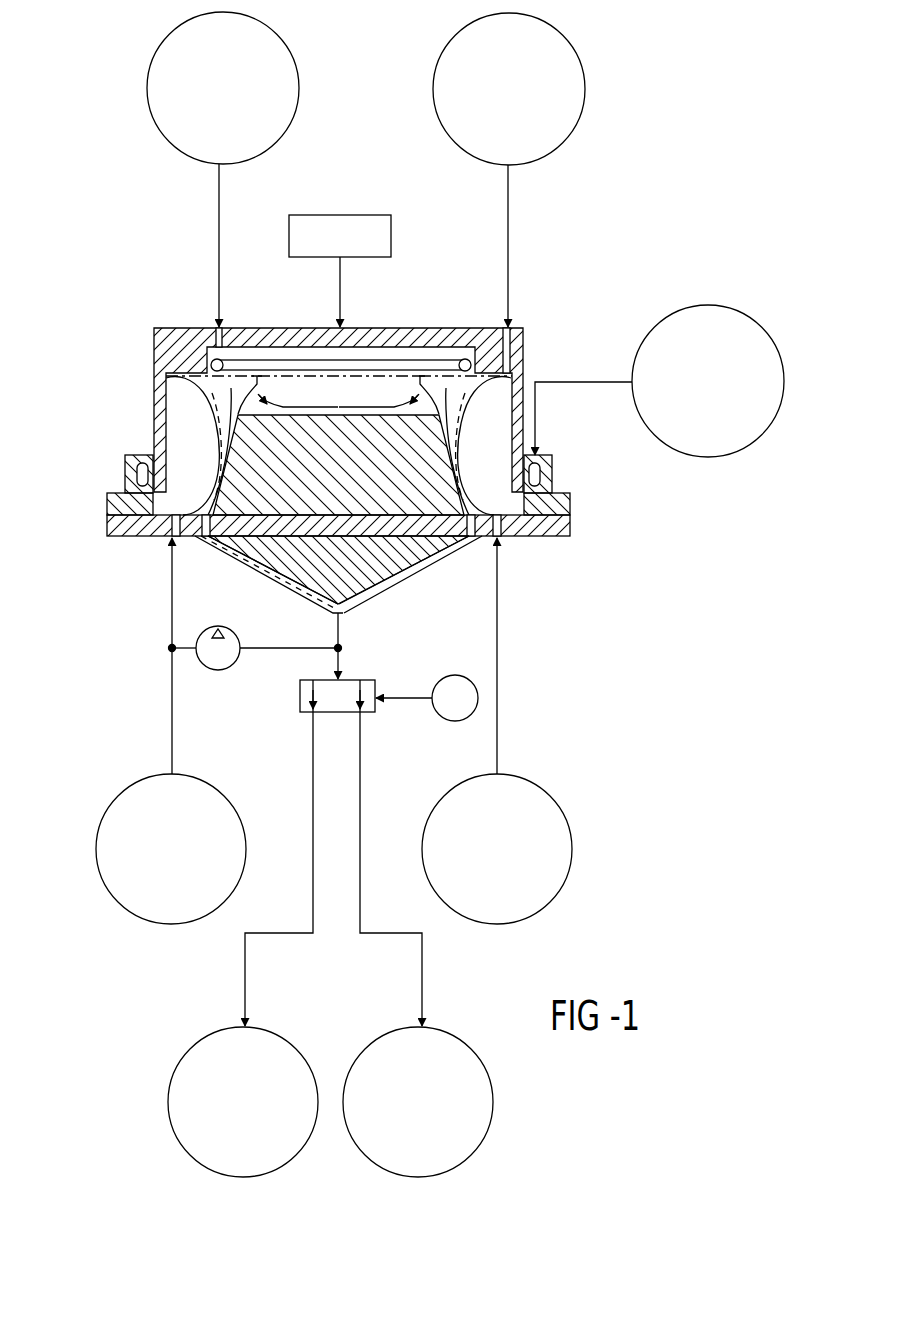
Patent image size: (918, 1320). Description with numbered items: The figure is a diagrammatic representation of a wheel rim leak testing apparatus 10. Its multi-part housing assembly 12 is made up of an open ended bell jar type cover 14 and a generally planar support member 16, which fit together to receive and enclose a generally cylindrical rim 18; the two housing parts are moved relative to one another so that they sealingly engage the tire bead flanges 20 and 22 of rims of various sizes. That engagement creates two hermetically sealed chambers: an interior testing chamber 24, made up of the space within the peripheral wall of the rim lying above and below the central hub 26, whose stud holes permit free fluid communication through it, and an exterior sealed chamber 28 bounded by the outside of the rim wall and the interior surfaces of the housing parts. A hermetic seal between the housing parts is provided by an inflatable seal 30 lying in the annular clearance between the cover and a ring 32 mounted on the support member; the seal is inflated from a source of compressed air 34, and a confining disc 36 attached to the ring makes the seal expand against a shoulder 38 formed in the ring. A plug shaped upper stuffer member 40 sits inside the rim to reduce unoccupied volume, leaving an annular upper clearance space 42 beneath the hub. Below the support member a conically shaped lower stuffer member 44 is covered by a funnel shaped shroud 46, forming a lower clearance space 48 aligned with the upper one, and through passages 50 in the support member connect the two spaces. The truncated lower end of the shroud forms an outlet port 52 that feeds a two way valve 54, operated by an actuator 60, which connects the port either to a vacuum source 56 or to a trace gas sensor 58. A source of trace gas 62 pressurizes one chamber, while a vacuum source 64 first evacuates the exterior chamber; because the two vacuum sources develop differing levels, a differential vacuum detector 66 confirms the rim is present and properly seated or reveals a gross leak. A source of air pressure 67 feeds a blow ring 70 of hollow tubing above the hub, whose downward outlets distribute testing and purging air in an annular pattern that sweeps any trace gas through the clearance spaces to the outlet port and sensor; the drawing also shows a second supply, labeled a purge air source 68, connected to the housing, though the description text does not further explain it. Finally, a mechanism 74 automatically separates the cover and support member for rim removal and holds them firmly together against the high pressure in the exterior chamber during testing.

The apparatus 10 is at (583, 290).
The housing assembly 12 is at (570, 515).
The cover 14 is at (155, 345).
The support member 16 is at (106, 516).
The rim 18 is at (208, 408).
The tire bead flange 20 is at (497, 385).
The tire bead flange 22 is at (505, 500).
The interior testing chamber 24 is at (324, 423).
The central hub 26 is at (366, 376).
The exterior sealed chamber 28 is at (204, 453).
The inflatable seal 30 is at (134, 470).
The ring 32 is at (120, 480).
The source of compressed air 34 is at (668, 318).
The confining disc 36 is at (136, 450).
The shoulder 38 is at (158, 483).
The upper stuffer member 40 is at (344, 481).
The upper clearance space 42 is at (468, 460).
The lower stuffer member 44 is at (352, 575).
The shroud 46 is at (273, 580).
The lower clearance space 48 is at (238, 562).
The through passages 50 is at (476, 543).
The outlet port 52 is at (346, 614).
The two way valve 54 is at (358, 680).
The vacuum source 56 is at (178, 1052).
The trace gas sensor 58 is at (480, 1022).
The actuator 60 is at (452, 675).
The source of trace gas 62 is at (548, 793).
The vacuum source 64 is at (202, 780).
The differential vacuum detector 66 is at (222, 670).
The source of air pressure 67 is at (298, 66).
The purge air source 68 is at (585, 92).
The blow ring 70 is at (414, 357).
The mechanism 74 is at (356, 215).